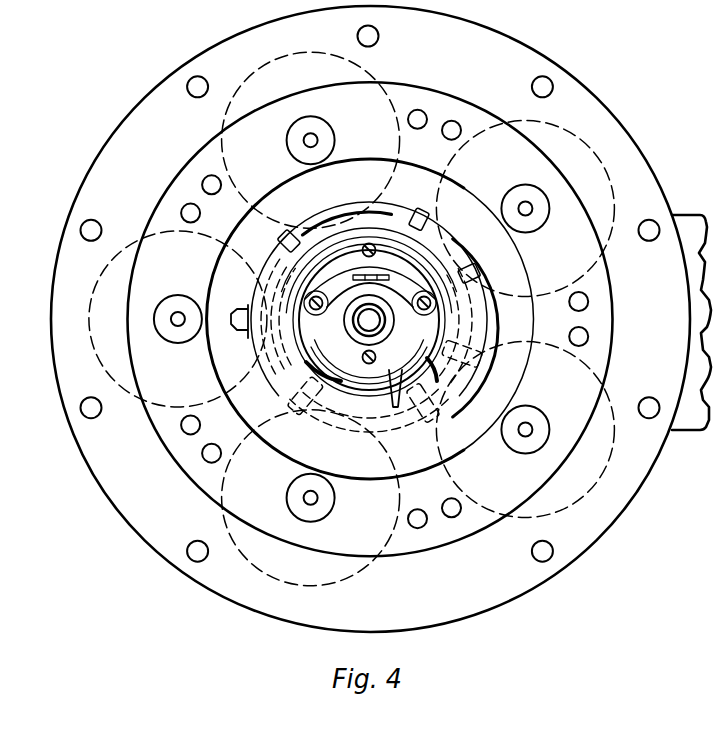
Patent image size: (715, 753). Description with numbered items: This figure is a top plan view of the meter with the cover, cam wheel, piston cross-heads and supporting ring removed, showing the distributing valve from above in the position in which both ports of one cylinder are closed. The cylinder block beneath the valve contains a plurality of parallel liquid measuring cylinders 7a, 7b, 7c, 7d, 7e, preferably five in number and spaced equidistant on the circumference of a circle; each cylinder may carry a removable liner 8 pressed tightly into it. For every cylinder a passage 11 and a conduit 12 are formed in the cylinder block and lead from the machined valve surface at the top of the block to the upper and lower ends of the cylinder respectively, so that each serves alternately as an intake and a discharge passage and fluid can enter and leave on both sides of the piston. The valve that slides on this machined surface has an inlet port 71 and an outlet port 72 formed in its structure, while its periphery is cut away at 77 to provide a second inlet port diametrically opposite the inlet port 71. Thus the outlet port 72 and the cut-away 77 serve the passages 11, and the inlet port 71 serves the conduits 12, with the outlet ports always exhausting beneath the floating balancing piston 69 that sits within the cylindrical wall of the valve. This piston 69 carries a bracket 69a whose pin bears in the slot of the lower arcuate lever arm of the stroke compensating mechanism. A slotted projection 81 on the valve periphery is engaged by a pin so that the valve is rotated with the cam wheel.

The liquid measuring cylinder 7a is at (102, 300).
The liquid measuring cylinder 7b is at (277, 83).
The liquid measuring cylinder 7c is at (557, 148).
The liquid measuring cylinder 7d is at (592, 453).
The liquid measuring cylinder 7e is at (278, 558).
The removable liner 8 is at (693, 254).
The passage 11 is at (425, 222).
The conduit 12 is at (417, 380).
The floating balancing piston 69 is at (417, 335).
The bracket 69a is at (420, 293).
The inlet port 71 is at (328, 385).
The outlet port 72 is at (457, 385).
The cut-away portion of valve periphery 77 is at (390, 208).
The slotted projection 81 is at (233, 307).